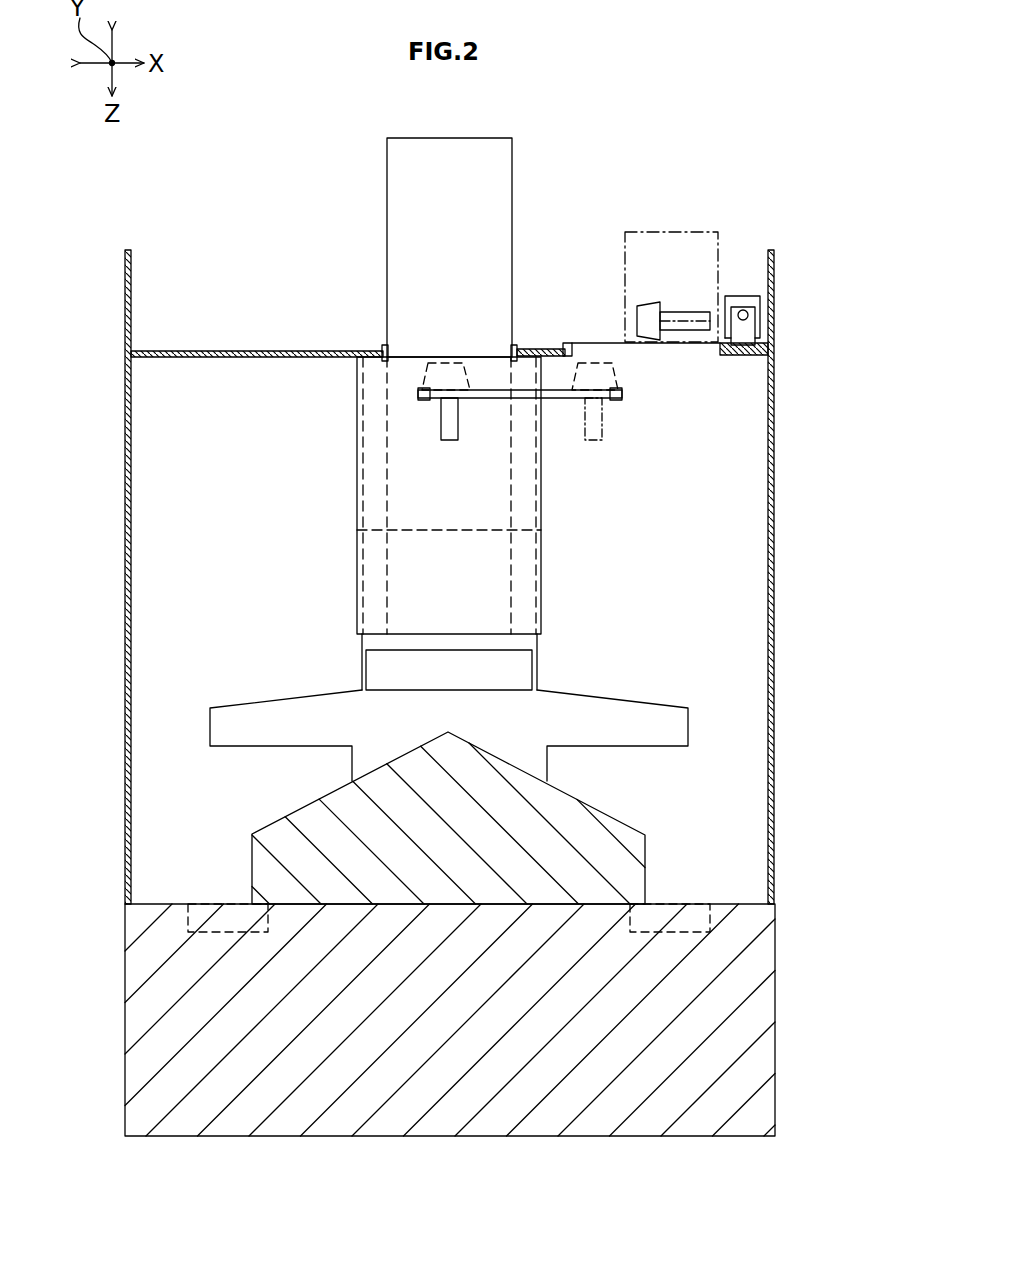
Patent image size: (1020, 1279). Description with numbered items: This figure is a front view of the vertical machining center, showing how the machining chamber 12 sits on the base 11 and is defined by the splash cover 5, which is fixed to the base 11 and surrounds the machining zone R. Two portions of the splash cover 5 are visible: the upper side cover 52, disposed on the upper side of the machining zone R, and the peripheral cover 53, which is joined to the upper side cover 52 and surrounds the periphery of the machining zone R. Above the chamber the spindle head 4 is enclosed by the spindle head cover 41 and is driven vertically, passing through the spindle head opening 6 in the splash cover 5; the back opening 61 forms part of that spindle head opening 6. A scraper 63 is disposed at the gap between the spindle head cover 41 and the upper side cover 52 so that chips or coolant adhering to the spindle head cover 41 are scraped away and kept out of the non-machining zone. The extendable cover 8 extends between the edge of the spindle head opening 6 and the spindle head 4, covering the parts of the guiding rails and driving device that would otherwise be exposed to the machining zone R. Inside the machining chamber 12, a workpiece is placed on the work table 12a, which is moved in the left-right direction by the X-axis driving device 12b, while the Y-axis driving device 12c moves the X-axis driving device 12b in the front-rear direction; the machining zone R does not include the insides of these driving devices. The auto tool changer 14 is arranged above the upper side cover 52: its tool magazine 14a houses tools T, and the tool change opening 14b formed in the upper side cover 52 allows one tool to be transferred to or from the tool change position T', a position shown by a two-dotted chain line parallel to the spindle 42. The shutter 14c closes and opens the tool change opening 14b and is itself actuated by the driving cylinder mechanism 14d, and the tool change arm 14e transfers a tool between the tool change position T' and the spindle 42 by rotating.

The spindle head 4 is at (443, 247).
The spindle head cover 41 is at (386, 178).
The spindle 42 is at (418, 400).
The splash cover 5 is at (124, 430).
The upper side cover 52 is at (258, 350).
The peripheral cover 53 is at (775, 572).
The spindle head opening 6 is at (364, 411).
The back opening 61 is at (410, 370).
The scraper 63 is at (516, 346).
The extendable cover 8 is at (542, 517).
The base 11 is at (775, 1002).
The machining chamber 12 is at (94, 492).
The work table 12a is at (500, 662).
The X-axis driving device 12b is at (656, 706).
The Y-axis driving device 12c is at (614, 818).
The auto tool changer 14 is at (737, 285).
The tool magazine 14a is at (668, 232).
The tool change opening 14b is at (720, 348).
The shutter 14c is at (637, 343).
The driving cylinder mechanism 14d is at (745, 336).
The tool change arm 14e is at (560, 400).
The tool T is at (466, 441).
The tool change position T' is at (617, 423).
The machining zone R is at (234, 612).